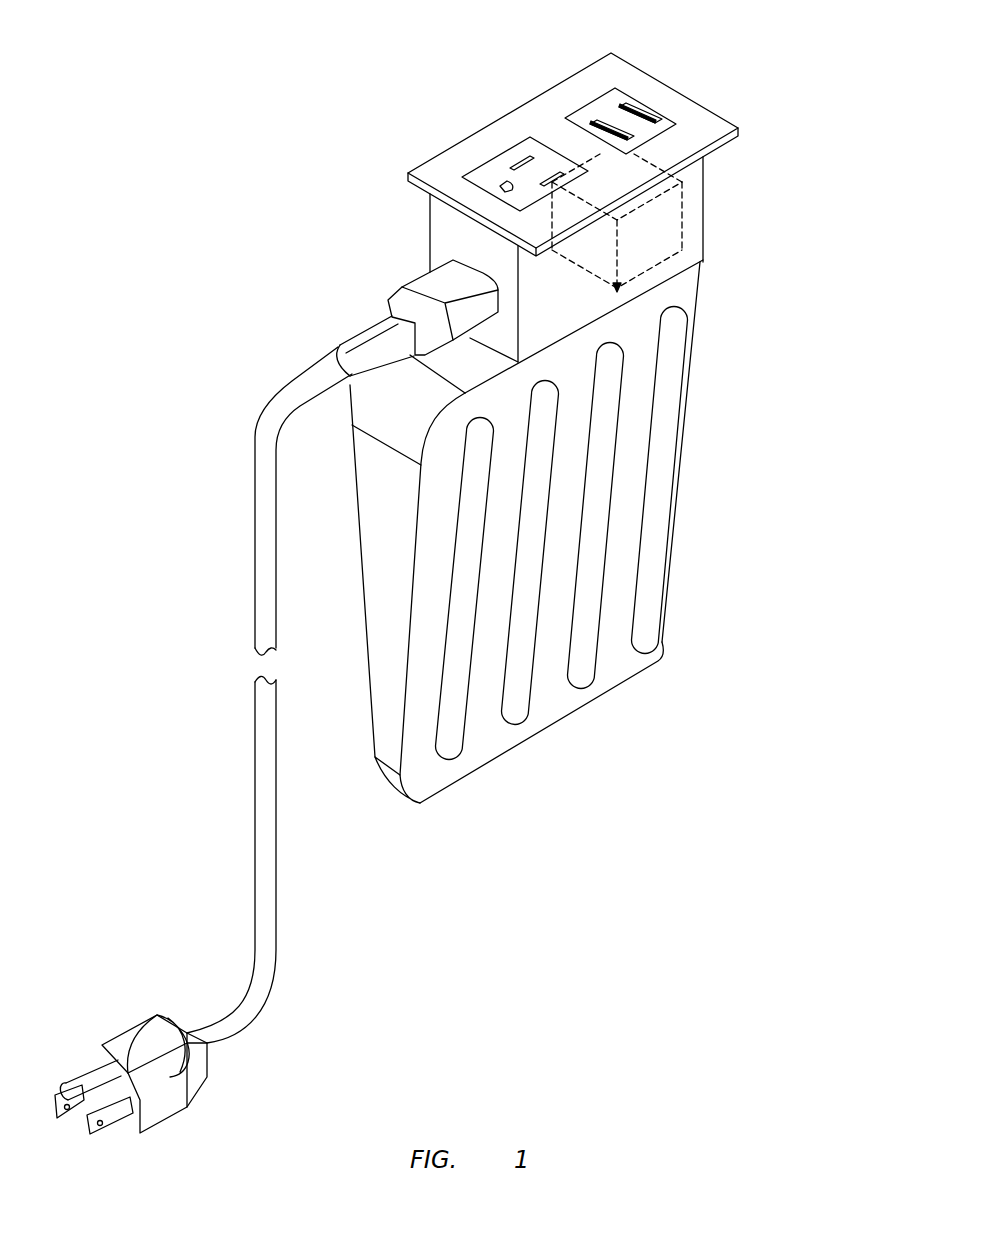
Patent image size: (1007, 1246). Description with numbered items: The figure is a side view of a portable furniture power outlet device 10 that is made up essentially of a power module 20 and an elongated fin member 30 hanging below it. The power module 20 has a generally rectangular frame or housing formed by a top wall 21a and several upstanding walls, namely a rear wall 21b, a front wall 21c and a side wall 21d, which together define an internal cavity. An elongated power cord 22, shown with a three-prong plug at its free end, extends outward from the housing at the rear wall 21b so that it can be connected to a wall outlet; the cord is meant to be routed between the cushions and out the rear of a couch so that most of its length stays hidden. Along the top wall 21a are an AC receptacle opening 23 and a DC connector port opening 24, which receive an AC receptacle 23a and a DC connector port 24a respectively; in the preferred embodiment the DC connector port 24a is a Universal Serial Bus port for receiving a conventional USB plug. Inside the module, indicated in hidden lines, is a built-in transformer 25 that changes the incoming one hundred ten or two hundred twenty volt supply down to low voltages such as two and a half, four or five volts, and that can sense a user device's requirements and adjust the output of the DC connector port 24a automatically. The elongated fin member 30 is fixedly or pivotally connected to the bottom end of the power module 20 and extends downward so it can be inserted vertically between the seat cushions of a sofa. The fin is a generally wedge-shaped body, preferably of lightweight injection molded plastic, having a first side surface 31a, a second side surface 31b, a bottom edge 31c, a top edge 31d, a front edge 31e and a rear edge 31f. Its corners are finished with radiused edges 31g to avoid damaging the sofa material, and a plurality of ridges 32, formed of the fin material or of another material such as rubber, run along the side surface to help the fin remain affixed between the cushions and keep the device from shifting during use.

The portable power outlet device 10 is at (333, 78).
The power module 20 is at (800, 92).
The top wall 21a is at (545, 92).
The rear wall 21b is at (443, 233).
The front wall 21c is at (703, 202).
The side wall 21d is at (580, 310).
The power cord 22 is at (277, 413).
The AC receptacle opening 23 is at (513, 147).
The AC receptacle 23a is at (490, 161).
The DC connector port opening 24 is at (610, 118).
The DC connector port 24a is at (583, 117).
The built-in transformer 25 is at (658, 242).
The elongated fin member 30 is at (800, 255).
The first side surface 31a is at (620, 525).
The second side surface 31b is at (362, 662).
The bottom edge 31c is at (552, 735).
The top edge 31d is at (673, 283).
The front edge 31e is at (682, 485).
The rear edge 31f is at (393, 553).
The radiused edges 31g is at (402, 415).
The ridges 32 is at (588, 652).